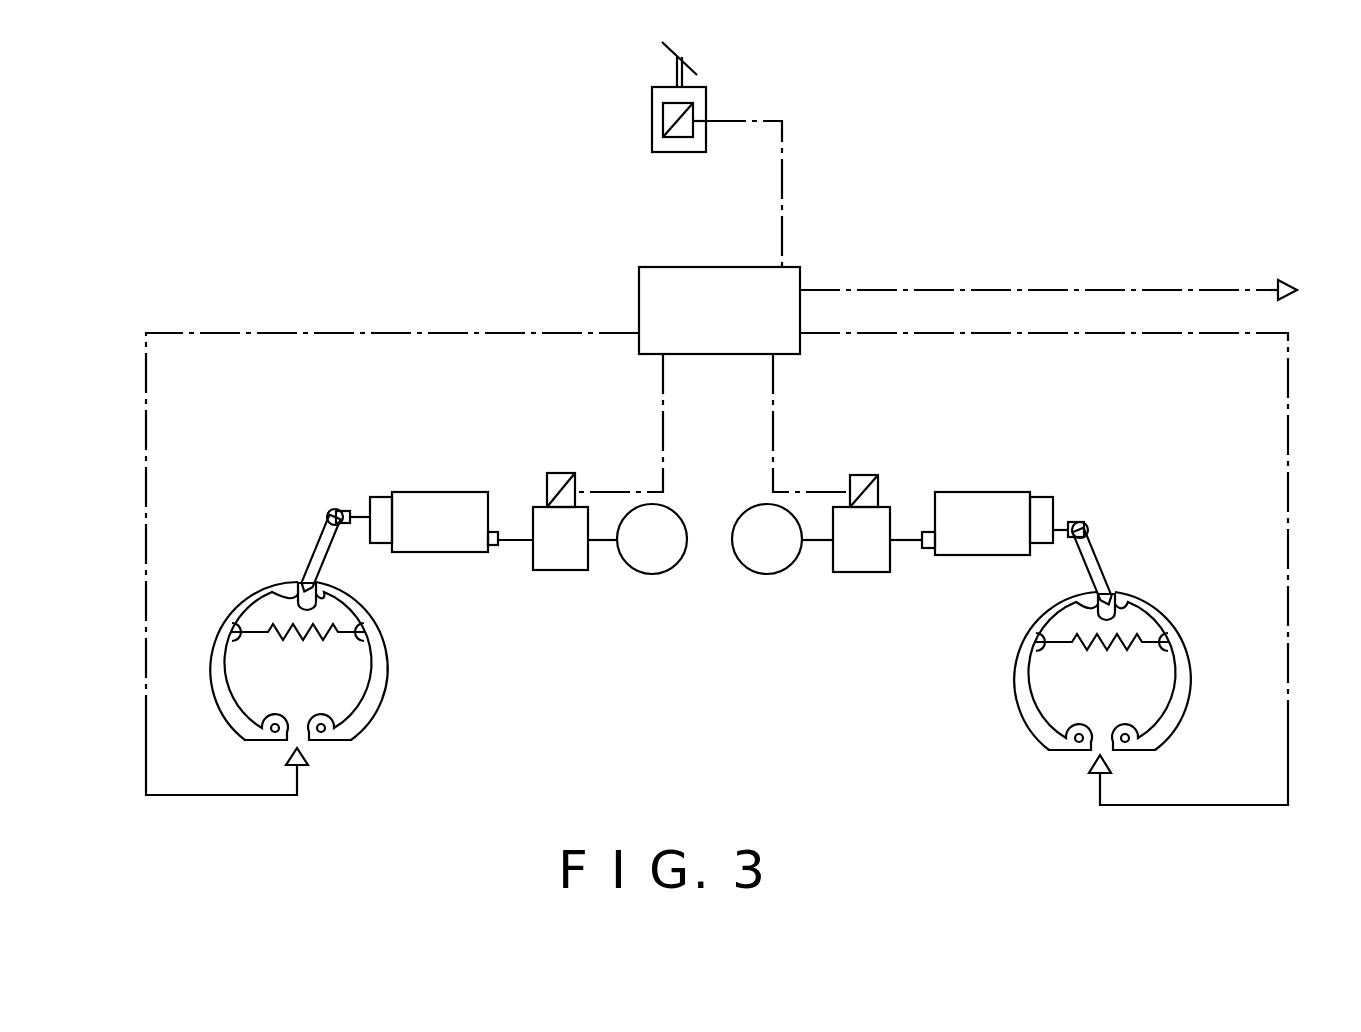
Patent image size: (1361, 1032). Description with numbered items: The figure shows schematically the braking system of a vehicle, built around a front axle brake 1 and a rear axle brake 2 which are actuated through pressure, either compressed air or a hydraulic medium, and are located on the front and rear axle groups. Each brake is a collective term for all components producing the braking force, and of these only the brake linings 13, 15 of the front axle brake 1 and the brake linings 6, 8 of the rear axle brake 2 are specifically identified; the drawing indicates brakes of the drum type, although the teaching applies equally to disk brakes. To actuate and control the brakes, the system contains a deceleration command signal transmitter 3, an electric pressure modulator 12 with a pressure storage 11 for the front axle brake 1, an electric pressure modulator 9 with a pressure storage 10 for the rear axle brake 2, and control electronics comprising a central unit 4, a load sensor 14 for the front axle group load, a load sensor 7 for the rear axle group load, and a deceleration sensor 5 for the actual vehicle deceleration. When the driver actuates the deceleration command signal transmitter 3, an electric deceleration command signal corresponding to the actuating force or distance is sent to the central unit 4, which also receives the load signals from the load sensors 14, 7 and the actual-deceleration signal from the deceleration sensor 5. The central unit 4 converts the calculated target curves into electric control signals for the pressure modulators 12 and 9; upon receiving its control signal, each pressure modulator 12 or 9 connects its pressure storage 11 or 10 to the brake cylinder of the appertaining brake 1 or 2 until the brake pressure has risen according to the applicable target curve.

The front axle brake 1 is at (304, 652).
The rear axle brake 2 is at (1101, 662).
The deceleration command signal transmitter 3 is at (652, 110).
The central unit 4 is at (790, 280).
The deceleration sensor 5 is at (1288, 280).
The brake lining 6 is at (1173, 671).
The load sensor 7 is at (1093, 763).
The brake lining 8 is at (1032, 671).
The electric pressure modulator 9 is at (864, 560).
The pressure storage 10 is at (766, 557).
The pressure storage 11 is at (655, 557).
The electric pressure modulator 12 is at (560, 558).
The brake lining 13 is at (377, 661).
The load sensor 14 is at (305, 758).
The brake lining 15 is at (230, 661).